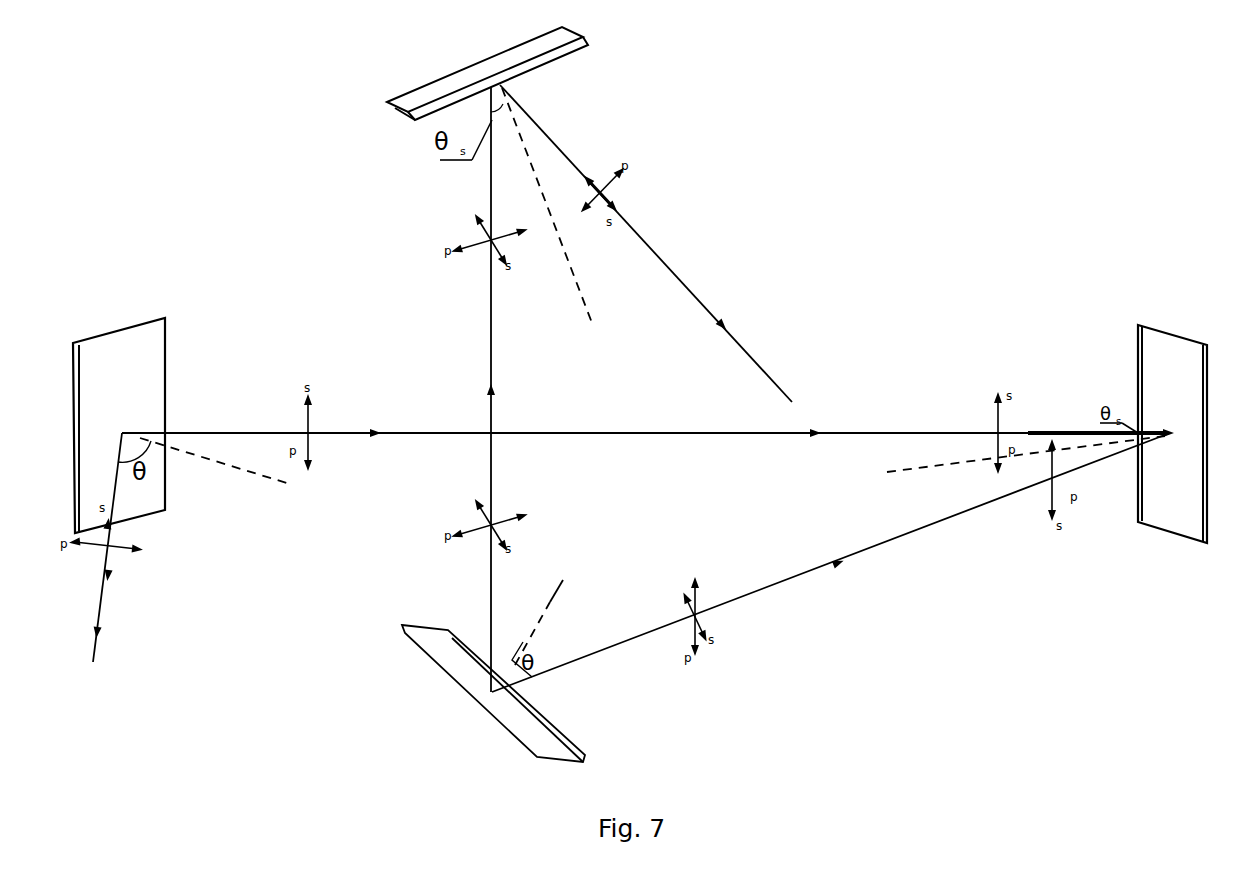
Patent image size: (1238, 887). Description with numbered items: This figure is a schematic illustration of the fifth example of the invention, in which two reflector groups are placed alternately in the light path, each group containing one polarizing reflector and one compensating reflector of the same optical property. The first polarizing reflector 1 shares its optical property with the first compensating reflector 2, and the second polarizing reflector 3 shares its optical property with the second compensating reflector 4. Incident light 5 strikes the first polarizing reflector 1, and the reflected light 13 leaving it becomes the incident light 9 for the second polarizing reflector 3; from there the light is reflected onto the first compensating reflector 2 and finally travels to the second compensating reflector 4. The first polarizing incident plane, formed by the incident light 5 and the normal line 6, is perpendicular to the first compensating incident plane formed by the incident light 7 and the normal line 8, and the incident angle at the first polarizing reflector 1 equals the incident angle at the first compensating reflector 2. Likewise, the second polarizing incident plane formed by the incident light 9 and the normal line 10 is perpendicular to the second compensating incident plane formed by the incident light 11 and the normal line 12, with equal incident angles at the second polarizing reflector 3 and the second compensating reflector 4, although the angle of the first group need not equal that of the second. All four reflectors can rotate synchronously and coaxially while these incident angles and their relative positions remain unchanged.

The first polarizing reflector 1 is at (148, 358).
The first compensating reflector 2 is at (445, 642).
The second polarizing reflector 3 is at (1146, 388).
The second compensating reflector 4 is at (634, 77).
The incident light 5 is at (104, 591).
The normal line 6 is at (219, 460).
The incident light 7 is at (622, 669).
The normal line 8 is at (583, 608).
The incident light 9 is at (1030, 433).
The normal line 10 is at (950, 464).
The incident light 11 is at (491, 303).
The normal line 12 is at (590, 302).
The reflected light 13 is at (228, 430).